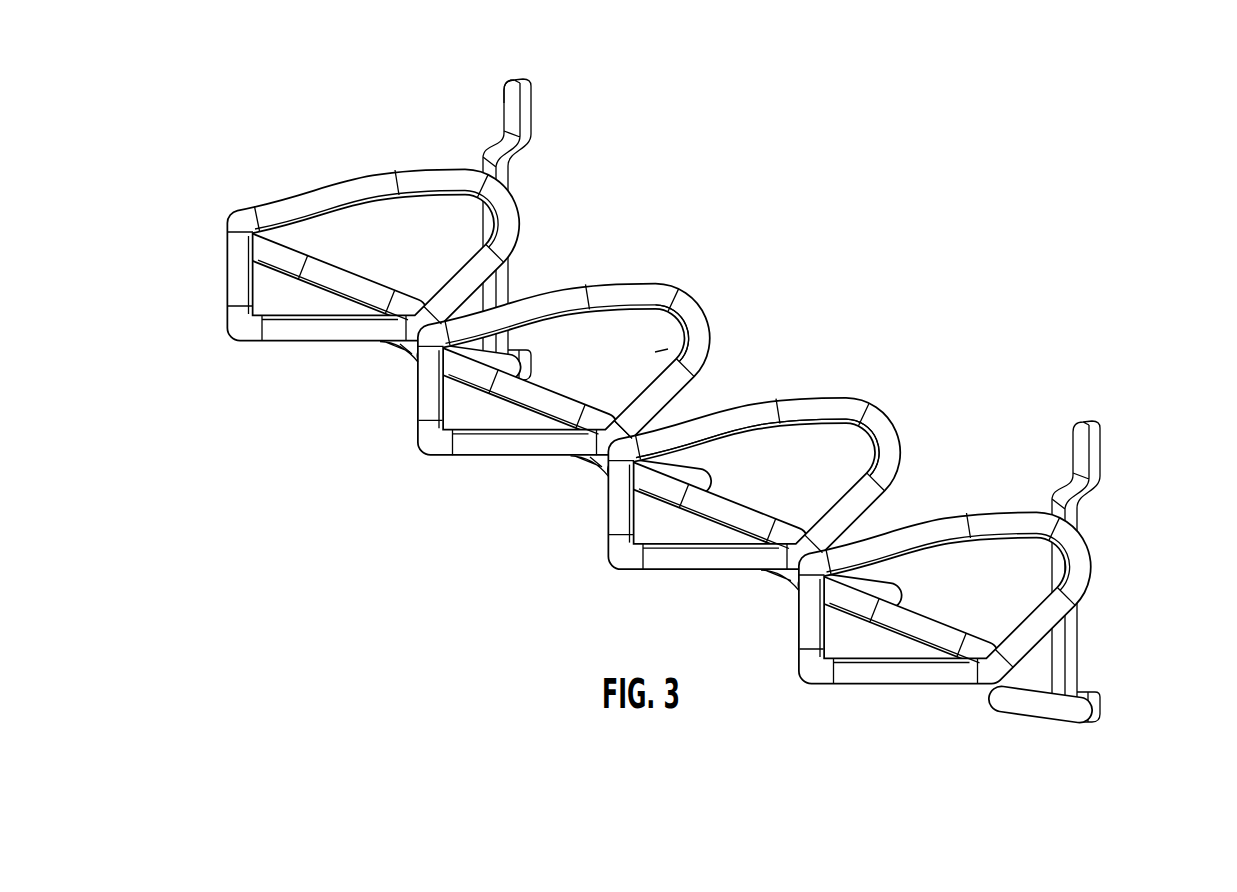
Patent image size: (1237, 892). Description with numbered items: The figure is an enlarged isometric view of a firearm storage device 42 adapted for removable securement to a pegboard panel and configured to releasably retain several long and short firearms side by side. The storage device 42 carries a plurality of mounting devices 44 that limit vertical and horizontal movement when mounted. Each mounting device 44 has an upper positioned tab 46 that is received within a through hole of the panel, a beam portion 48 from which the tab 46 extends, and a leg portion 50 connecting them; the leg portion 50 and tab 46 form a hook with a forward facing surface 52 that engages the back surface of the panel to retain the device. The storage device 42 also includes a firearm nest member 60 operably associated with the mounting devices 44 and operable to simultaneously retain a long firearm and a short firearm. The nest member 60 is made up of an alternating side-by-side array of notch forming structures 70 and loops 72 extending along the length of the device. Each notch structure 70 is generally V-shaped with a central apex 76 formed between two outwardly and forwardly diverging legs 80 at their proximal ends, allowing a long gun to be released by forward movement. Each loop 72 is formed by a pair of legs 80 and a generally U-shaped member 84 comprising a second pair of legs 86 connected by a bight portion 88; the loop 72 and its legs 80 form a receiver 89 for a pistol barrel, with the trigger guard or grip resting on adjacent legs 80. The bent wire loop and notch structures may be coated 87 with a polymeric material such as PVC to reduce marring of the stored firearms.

The firearm storage device 42 is at (1148, 528).
The mounting device 44 is at (533, 120).
The tab 46 is at (532, 85).
The beam portion 48 is at (510, 274).
The leg portion 50 is at (522, 152).
The forward facing surface 52 is at (506, 80).
The firearm nest member 60 is at (683, 292).
The notch forming structure 70 is at (380, 344).
The loop 72 is at (376, 180).
The central apex 76 is at (407, 345).
The legs 80 is at (229, 262).
The U-shaped member 84 is at (690, 370).
The second pair of legs 86 is at (565, 284).
The coating 87 is at (888, 488).
The bight portion 88 is at (420, 212).
The receiver 89 is at (662, 350).